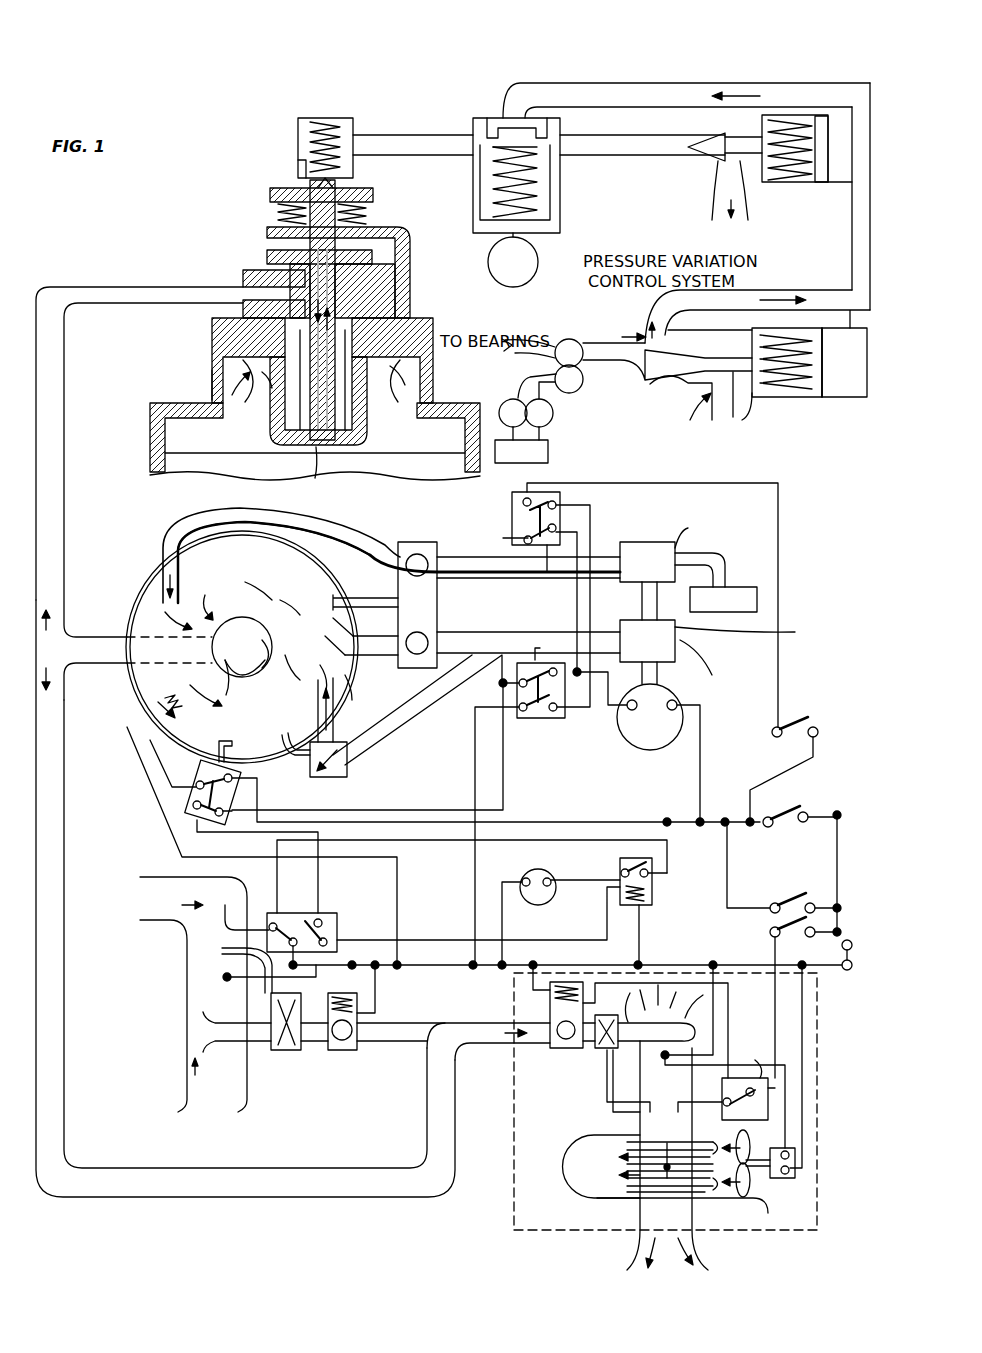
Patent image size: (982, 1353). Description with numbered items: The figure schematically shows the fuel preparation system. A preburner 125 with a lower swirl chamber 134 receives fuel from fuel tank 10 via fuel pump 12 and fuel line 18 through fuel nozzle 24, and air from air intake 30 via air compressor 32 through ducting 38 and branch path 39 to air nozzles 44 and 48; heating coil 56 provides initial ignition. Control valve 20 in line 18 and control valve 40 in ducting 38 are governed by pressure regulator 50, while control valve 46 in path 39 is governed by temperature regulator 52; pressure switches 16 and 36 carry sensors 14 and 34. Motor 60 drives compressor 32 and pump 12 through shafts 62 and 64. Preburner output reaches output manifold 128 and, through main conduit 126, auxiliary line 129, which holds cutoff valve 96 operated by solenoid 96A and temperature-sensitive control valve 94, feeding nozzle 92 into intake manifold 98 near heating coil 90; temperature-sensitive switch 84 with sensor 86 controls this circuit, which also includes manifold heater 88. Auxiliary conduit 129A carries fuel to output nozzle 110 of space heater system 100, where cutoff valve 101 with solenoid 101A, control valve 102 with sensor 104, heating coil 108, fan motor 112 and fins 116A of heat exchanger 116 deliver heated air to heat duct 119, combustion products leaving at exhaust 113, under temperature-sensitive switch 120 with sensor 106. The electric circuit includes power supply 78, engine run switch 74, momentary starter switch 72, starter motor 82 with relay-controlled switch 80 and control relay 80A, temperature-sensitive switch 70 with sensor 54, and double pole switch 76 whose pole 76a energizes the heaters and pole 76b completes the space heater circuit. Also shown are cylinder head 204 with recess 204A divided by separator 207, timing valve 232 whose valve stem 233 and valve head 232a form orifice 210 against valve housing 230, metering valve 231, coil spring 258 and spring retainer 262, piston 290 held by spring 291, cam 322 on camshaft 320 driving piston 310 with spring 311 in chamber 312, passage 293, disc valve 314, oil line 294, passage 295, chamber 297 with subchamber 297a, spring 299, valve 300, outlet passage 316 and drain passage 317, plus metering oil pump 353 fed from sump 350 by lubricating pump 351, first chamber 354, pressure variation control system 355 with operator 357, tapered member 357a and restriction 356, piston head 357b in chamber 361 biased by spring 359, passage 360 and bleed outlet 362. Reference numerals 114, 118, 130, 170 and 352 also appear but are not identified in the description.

The fuel tank 10 is at (757, 595).
The fuel pump 12 is at (632, 545).
The pressure sensor 14 is at (550, 575).
The first pressure-sensitive switch 16 is at (512, 512).
The fuel line 18 is at (488, 572).
The control valve 20 is at (428, 558).
The fuel injection nozzle 24 is at (180, 580).
The air intake 30 is at (715, 668).
The air compressor 32 is at (640, 620).
The pressure sensor 34 is at (552, 616).
The second pressure-sensitive switch 36 is at (540, 720).
The ducting 38 is at (480, 642).
The branch path 39 is at (420, 706).
The control valve 40 is at (437, 630).
The air injection nozzle 44 is at (340, 640).
The control valve 46 is at (347, 772).
The air injection nozzle 48 is at (318, 704).
The pressure regulator 50 is at (333, 598).
The temperature regulator 52 is at (290, 732).
The temperature sensor 54 is at (224, 740).
The heating coil 56 is at (182, 708).
The electric motor 60 is at (645, 752).
The shaft 62 is at (665, 678).
The shaft 64 is at (657, 595).
The temperature-sensitive switch 70 is at (248, 787).
The engine starter switch 72 is at (797, 742).
The engine run switch 74 is at (782, 838).
The double pole switch 76 is at (770, 898).
The first pole of switch 76a is at (808, 900).
The second pole of switch 76b is at (772, 930).
The power supply 78 is at (852, 944).
The relay-controlled switch 80 is at (620, 862).
The control relay 80A is at (652, 898).
The starter motor 82 is at (528, 870).
The temperature-sensitive switch 84 is at (337, 918).
The temperature sensor 86 is at (226, 915).
The manifold heater 88 is at (222, 951).
The heating coil 90 is at (225, 978).
The nozzle 92 is at (205, 1016).
The temperature sensitive control valve 94 is at (288, 1050).
The cutoff valve 96 is at (350, 1060).
The control solenoid 96A is at (360, 1013).
The intake manifold 98 is at (180, 1078).
The space heater system 100 is at (514, 1170).
The cutoff valve 101 is at (556, 1050).
The cutoff valve control solenoid 101A is at (550, 1000).
The temperature-sensitive control valve 102 is at (600, 1090).
The sensor 104 is at (635, 1110).
The sensor 106 is at (685, 1104).
The heating coil 108 is at (660, 1056).
The output nozzle 110 is at (670, 1032).
The fan motor 112 is at (796, 1170).
The exhaust 113 is at (667, 1155).
The temperature sensor 114 is at (708, 1150).
The heat exchanger 116 is at (636, 1196).
The fins 116A is at (700, 1197).
The fan 118 is at (776, 1173).
The heat duct 119 is at (602, 1166).
The temperature-sensitive switch 120 is at (768, 1100).
The preburner 125 is at (352, 688).
The main conduit 126 is at (127, 684).
The output manifold 128 is at (64, 574).
The auxiliary line 129 is at (64, 797).
The auxiliary conduit 129A is at (458, 1050).
The passage 130 is at (127, 727).
The swirl chamber 134 is at (130, 620).
The control circuit 170 is at (650, 483).
The cylinder head 204 is at (225, 332).
The recess 204A is at (214, 380).
The separator 207 is at (250, 420).
The variable orifice 210 is at (262, 375).
The valve housing 230 is at (268, 290).
The metering valve 231 is at (358, 428).
The timing and fuel admission valve 232 is at (355, 447).
The valve head 232a is at (318, 470).
The valve stem 233 is at (368, 214).
The coil spring 258 is at (278, 214).
The spring retainer 262 is at (270, 194).
The piston 290 is at (300, 168).
The spring 291 is at (300, 130).
The passage 293 is at (420, 142).
The oil line 294 is at (852, 256).
The passage 295 is at (645, 100).
The chamber 297 is at (773, 190).
The subchamber 297a is at (803, 181).
The spring 299 is at (790, 182).
The valve 300 is at (730, 138).
The piston 310 is at (560, 222).
The spring 311 is at (538, 192).
The chamber 312 is at (540, 170).
The disc valve 314 is at (505, 122).
The outlet passage 316 is at (612, 157).
The drain passage 317 is at (730, 190).
The camshaft 320 is at (492, 275).
The fuel control cam 322 is at (500, 240).
The engine oil sump 350 is at (548, 458).
The lubricating oil pump 351 is at (548, 420).
The line 352 is at (518, 372).
The metering oil pump 353 is at (583, 388).
The first chamber 354 is at (610, 340).
The pressure variation control valve system 355 is at (657, 378).
The restriction 356 is at (685, 358).
The valve operator 357 is at (745, 410).
The tapered operator member 357a is at (679, 398).
The piston head 357b is at (812, 397).
The spring 359 is at (805, 340).
The passage 360 is at (668, 310).
The chamber 361 is at (844, 362).
The bleed outlet 362 is at (732, 407).